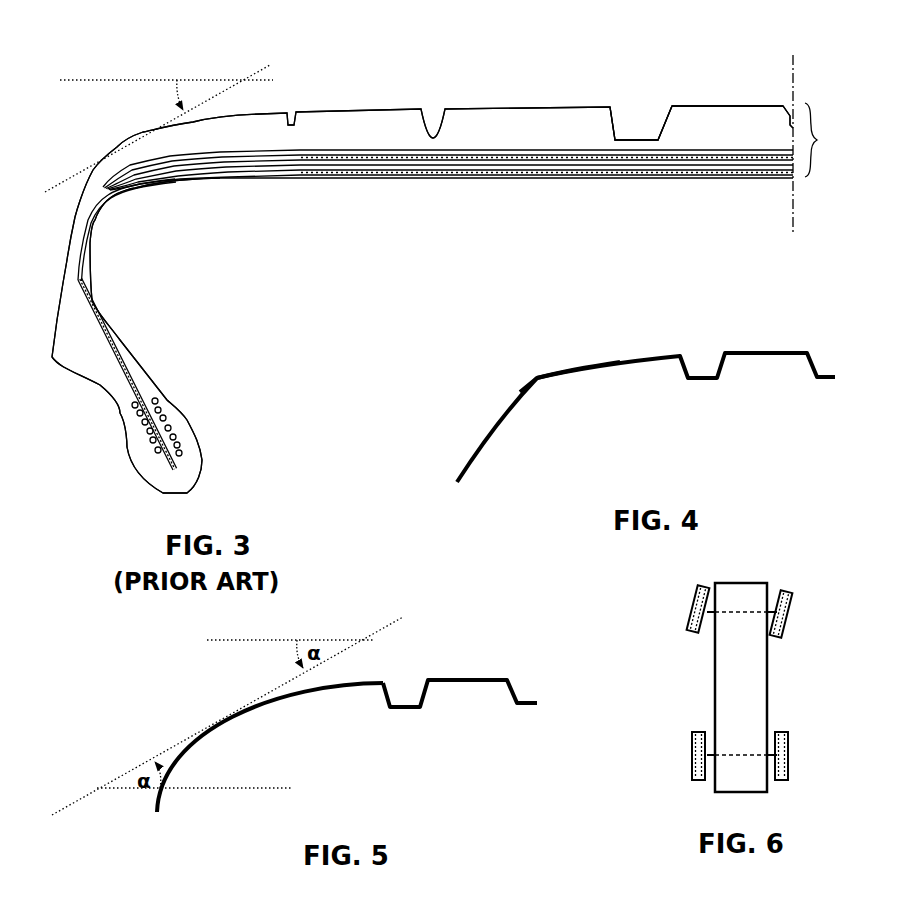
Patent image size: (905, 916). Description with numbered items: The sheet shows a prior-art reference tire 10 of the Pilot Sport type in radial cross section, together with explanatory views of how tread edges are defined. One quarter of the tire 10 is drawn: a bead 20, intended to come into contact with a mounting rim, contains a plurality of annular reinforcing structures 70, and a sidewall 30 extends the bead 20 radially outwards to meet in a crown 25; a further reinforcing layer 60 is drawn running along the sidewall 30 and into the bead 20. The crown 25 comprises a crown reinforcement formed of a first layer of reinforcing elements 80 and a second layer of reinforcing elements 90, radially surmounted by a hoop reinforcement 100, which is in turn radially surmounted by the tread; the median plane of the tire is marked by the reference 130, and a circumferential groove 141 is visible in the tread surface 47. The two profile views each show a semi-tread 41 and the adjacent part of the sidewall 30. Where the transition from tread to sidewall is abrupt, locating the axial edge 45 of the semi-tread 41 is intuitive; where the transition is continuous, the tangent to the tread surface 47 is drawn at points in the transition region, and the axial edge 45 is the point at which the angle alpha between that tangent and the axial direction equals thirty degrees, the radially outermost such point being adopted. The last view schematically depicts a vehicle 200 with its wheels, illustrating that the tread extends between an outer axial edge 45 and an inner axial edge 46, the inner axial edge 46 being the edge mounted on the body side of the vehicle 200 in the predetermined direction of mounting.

In FIG. 3, the reference tire 10 is at (83, 62).
In FIG. 3, the bead 20 is at (135, 460).
In FIG. 3, the crown 25 is at (838, 140).
In FIG. 3, the sidewall 30 is at (65, 283).
In FIG. 4, the sidewall 30 is at (478, 443).
In FIG. 3, the semi-tread 41 is at (601, 138).
In FIG. 4, the semi-tread 41 is at (663, 396).
In FIG. 5, the semi-tread 41 is at (365, 723).
In FIG. 3, the axial edge 45 is at (137, 142).
In FIG. 4, the axial edge 45 is at (535, 375).
In FIG. 5, the axial edge 45 is at (225, 713).
In FIG. 6, the axial edge 45 is at (682, 632).
In FIG. 6, the inner axial edge 46 is at (701, 634).
In FIG. 3, the tread surface 47 is at (748, 103).
In FIG. 3, the carcass ply 60 is at (83, 232).
In FIG. 3, the annular reinforcing structure 70 is at (167, 418).
In FIG. 3, the first layer of reinforcing elements 80 is at (345, 157).
In FIG. 3, the second layer of reinforcing elements 90 is at (383, 152).
In FIG. 3, the hoop reinforcement 100 is at (467, 150).
In FIG. 3, the median plane 130 is at (795, 232).
In FIG. 3, the circumferential groove 141 is at (640, 118).
In FIG. 6, the vehicle 200 is at (742, 687).